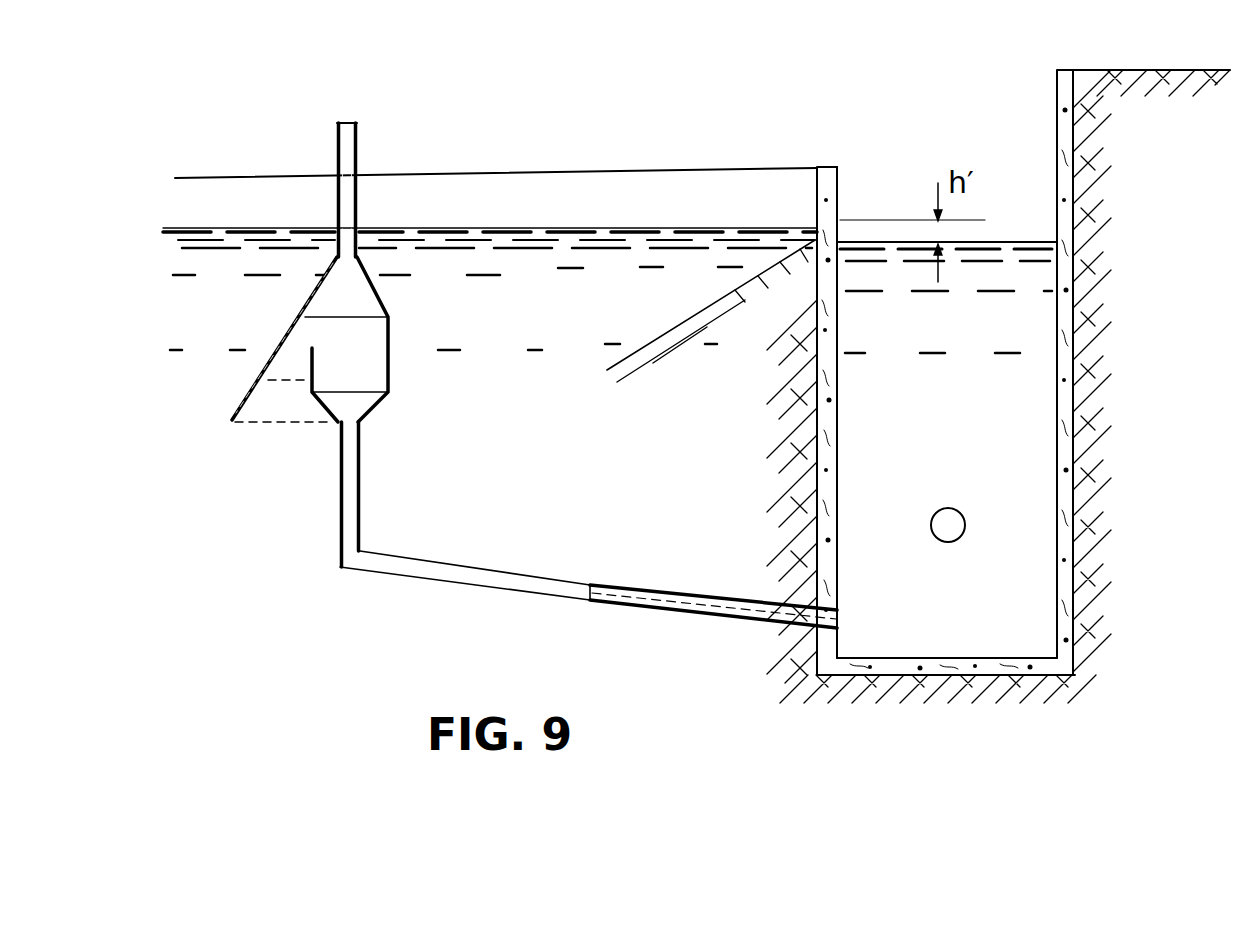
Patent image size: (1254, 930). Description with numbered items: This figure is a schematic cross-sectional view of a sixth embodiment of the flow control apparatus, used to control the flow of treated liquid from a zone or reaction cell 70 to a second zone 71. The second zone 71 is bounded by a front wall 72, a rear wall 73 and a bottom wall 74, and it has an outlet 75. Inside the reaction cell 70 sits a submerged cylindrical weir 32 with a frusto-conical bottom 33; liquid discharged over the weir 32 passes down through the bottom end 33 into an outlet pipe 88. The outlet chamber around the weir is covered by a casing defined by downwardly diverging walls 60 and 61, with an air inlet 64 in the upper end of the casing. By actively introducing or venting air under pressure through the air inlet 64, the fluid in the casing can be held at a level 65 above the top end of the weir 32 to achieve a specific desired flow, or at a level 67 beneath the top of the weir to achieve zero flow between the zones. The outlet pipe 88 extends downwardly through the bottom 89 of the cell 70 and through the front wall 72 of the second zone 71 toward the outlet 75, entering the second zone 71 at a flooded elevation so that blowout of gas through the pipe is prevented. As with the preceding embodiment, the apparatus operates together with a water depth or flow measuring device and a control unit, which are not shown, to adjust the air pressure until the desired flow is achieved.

The submerged cylindrical weir 32 is at (366, 384).
The frusto-conical bottom 33 is at (372, 420).
The downwardly flaring end wall 60 is at (287, 336).
The downwardly flaring end wall 61 is at (368, 272).
The air inlet 64 is at (358, 152).
The liquid level 65 is at (362, 317).
The liquid level 67 is at (276, 403).
The zone or reaction cell 70 is at (586, 323).
The second zone 71 is at (951, 482).
The front wall 72 is at (830, 167).
The rear wall 73 is at (1057, 70).
The bottom wall 74 is at (972, 660).
The outlet 75 is at (965, 530).
The outlet pipe 88 is at (544, 585).
The bottom of the cell 89 is at (690, 318).